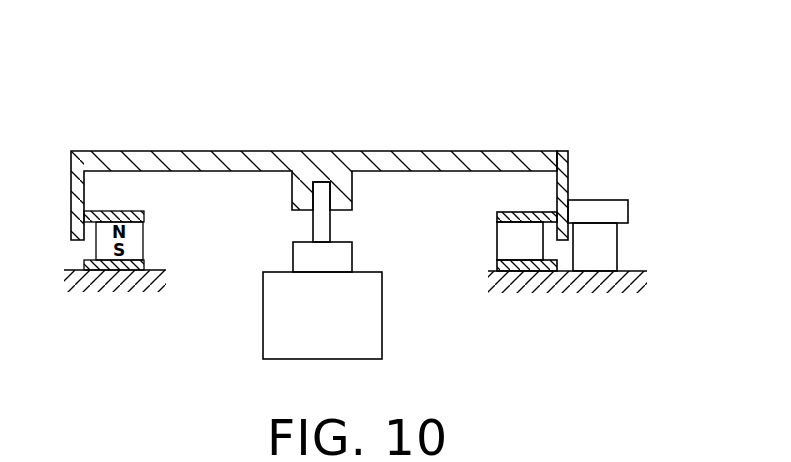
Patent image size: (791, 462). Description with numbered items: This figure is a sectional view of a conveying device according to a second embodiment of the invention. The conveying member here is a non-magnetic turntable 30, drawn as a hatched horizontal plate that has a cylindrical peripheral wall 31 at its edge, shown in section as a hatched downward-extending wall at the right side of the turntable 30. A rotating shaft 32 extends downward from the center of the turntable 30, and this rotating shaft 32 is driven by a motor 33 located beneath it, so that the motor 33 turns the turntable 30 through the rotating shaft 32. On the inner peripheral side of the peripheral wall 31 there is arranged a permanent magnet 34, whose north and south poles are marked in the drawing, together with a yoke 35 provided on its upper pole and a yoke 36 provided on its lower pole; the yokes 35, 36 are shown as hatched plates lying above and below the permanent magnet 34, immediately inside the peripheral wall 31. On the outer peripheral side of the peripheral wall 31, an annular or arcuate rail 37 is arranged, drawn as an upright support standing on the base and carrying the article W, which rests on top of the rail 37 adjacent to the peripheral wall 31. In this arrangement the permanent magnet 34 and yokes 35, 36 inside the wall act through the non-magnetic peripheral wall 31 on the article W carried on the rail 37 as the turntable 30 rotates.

The non-magnetic turntable 30 is at (394, 151).
The cylindrical peripheral wall 31 is at (568, 166).
The rotating shaft 32 is at (323, 226).
The motor 33 is at (375, 322).
The permanent magnet 34 is at (498, 241).
The yoke 35 is at (505, 212).
The yoke 36 is at (516, 270).
The annular or arcuate rail 37 is at (607, 247).
The workpiece W is at (628, 205).